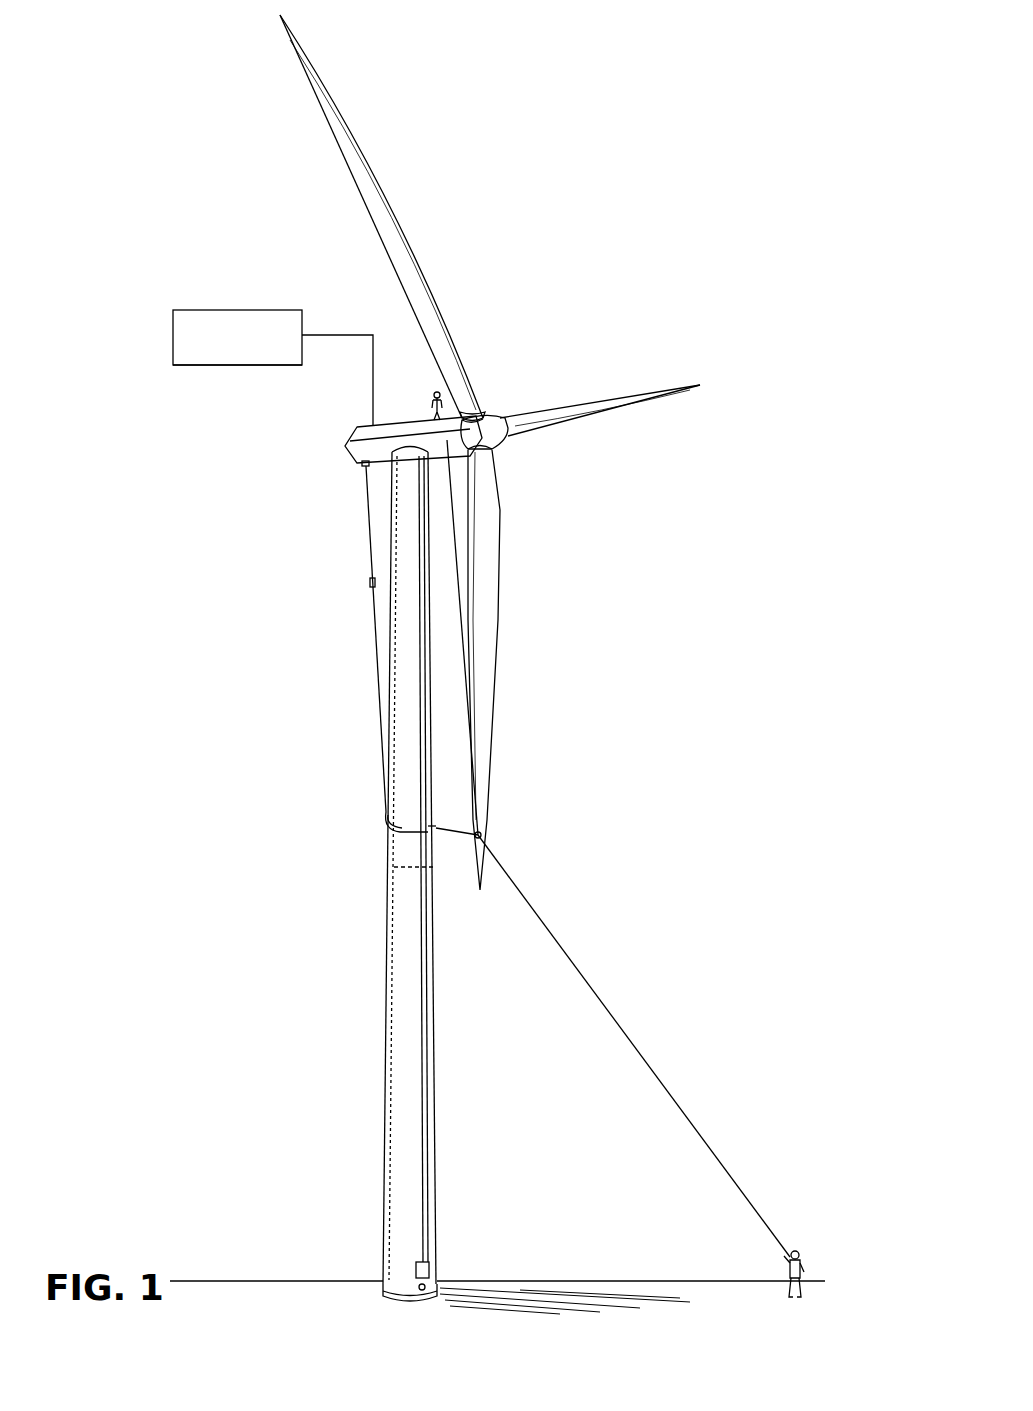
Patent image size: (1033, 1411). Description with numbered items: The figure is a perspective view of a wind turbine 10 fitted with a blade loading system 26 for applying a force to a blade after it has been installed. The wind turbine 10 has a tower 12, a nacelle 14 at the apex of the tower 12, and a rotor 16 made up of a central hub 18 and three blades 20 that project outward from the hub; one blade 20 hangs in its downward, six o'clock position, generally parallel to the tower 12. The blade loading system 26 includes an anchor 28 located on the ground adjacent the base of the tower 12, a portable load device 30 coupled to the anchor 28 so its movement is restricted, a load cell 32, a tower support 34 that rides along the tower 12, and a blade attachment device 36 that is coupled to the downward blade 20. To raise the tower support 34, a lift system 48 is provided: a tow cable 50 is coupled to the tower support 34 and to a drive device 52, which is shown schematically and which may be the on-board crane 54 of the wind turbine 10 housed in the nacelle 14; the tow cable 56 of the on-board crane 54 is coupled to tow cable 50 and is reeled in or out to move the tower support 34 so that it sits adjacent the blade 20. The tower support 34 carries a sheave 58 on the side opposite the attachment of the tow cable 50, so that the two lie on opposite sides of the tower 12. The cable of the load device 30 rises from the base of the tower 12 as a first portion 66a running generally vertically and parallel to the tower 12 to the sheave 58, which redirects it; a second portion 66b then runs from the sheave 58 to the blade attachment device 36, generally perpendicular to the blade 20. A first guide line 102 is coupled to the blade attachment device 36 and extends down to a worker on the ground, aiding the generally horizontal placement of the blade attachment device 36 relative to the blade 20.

The wind turbine 10 is at (586, 240).
The tower 12 is at (385, 915).
The nacelle 14 is at (352, 428).
The rotor 16 is at (507, 451).
The central hub 18 is at (489, 414).
The blade 20 is at (404, 222).
The blade loading system 26 is at (586, 922).
The anchor 28 is at (392, 1286).
The load device 30 is at (431, 1268).
The load cell 32 is at (436, 1288).
The tower support 34 is at (385, 807).
The blade attachment device 36 is at (482, 836).
The lift system 48 is at (268, 456).
The tow cable 50 is at (378, 629).
The drive device 52 is at (176, 308).
The on-board crane 54 is at (187, 366).
The tow cable 56 is at (372, 538).
The sheave 58 is at (428, 828).
The first portion of the cable 66a is at (430, 1197).
The second portion of the cable 66b is at (448, 828).
The first guide line 102 is at (586, 964).